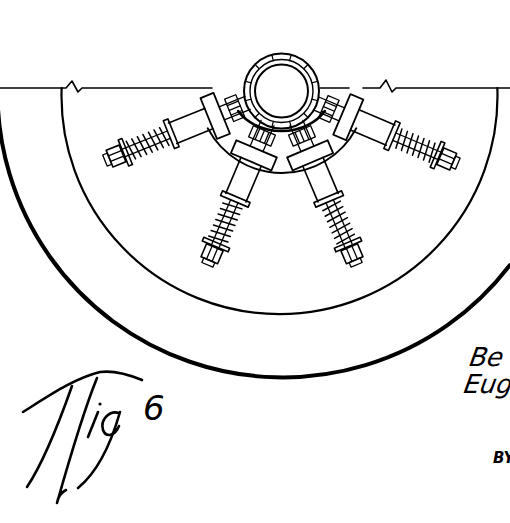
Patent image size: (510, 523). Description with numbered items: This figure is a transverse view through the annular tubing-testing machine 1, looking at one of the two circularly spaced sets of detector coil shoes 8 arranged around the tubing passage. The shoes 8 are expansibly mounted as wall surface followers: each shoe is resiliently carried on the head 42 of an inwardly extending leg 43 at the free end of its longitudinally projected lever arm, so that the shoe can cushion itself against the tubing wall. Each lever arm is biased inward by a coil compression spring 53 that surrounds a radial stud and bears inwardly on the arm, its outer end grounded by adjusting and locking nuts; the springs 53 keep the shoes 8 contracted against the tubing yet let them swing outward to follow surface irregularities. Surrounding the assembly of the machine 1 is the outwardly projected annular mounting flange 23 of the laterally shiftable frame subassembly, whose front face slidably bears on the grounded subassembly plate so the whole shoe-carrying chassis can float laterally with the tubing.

The hub ring 1 is at (262, 60).
The detector coil shoe 8 is at (323, 87).
The annular mounting flange 23 is at (451, 212).
The head 42 is at (349, 95).
The inwardly extending leg 43 is at (333, 178).
The coil compression spring 53 is at (409, 134).